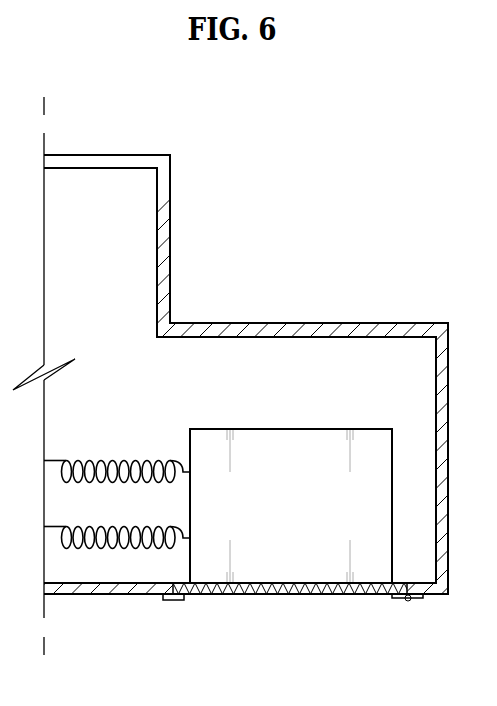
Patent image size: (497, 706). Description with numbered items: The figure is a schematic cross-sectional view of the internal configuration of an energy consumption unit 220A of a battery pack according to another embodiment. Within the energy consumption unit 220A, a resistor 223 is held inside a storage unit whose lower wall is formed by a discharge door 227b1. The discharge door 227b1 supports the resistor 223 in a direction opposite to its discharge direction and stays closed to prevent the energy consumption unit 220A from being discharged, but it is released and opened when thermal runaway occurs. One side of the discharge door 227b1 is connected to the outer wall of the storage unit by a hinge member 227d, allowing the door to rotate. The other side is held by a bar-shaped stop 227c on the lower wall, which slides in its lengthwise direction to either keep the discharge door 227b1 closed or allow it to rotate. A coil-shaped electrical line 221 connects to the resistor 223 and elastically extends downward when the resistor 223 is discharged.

The energy consumption unit 220A is at (304, 296).
The electrical line 221 is at (127, 459).
The resistor 223 is at (301, 428).
The stop 227c is at (177, 601).
The discharge door 227b1 is at (234, 596).
The hinge member 227d is at (408, 602).